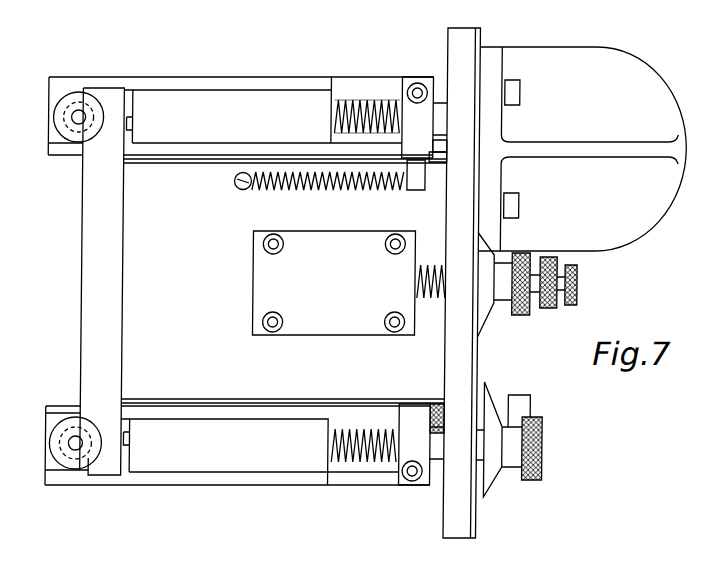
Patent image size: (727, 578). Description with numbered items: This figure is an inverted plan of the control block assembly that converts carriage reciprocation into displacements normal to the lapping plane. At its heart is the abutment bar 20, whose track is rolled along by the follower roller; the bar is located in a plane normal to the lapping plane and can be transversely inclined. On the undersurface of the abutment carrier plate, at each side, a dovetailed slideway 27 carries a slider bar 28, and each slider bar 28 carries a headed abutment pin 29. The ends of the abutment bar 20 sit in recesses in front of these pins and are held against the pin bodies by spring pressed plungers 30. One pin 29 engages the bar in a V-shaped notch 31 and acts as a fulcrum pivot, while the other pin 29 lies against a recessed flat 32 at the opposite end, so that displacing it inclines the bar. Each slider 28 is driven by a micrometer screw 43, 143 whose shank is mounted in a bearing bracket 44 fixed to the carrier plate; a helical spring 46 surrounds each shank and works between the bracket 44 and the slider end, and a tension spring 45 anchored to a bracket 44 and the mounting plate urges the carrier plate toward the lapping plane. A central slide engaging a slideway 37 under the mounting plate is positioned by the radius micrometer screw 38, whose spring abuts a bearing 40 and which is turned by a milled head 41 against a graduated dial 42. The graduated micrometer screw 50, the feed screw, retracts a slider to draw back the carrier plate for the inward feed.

The abutment bar 20 is at (112, 221).
The dovetailed slideway 27 is at (213, 83).
The slider bar 28 is at (247, 108).
The headed abutment pin 29 is at (74, 95).
The spring pressed plunger 30 is at (130, 117).
The V-shaped notch 31 is at (96, 118).
The recessed flat 32 is at (90, 452).
The slideway 37 is at (265, 287).
The micrometer screw 38 is at (424, 262).
The bearing 40 is at (462, 374).
The milled head 41 is at (527, 312).
The graduated dial 42 is at (490, 310).
The micrometer screw 43 is at (345, 445).
The bearing bracket 44 is at (408, 80).
The tension spring 45 is at (324, 190).
The helical spring 46 is at (365, 120).
The graduated micrometer screw 50 is at (532, 411).
The micrometer screw 143 is at (353, 110).